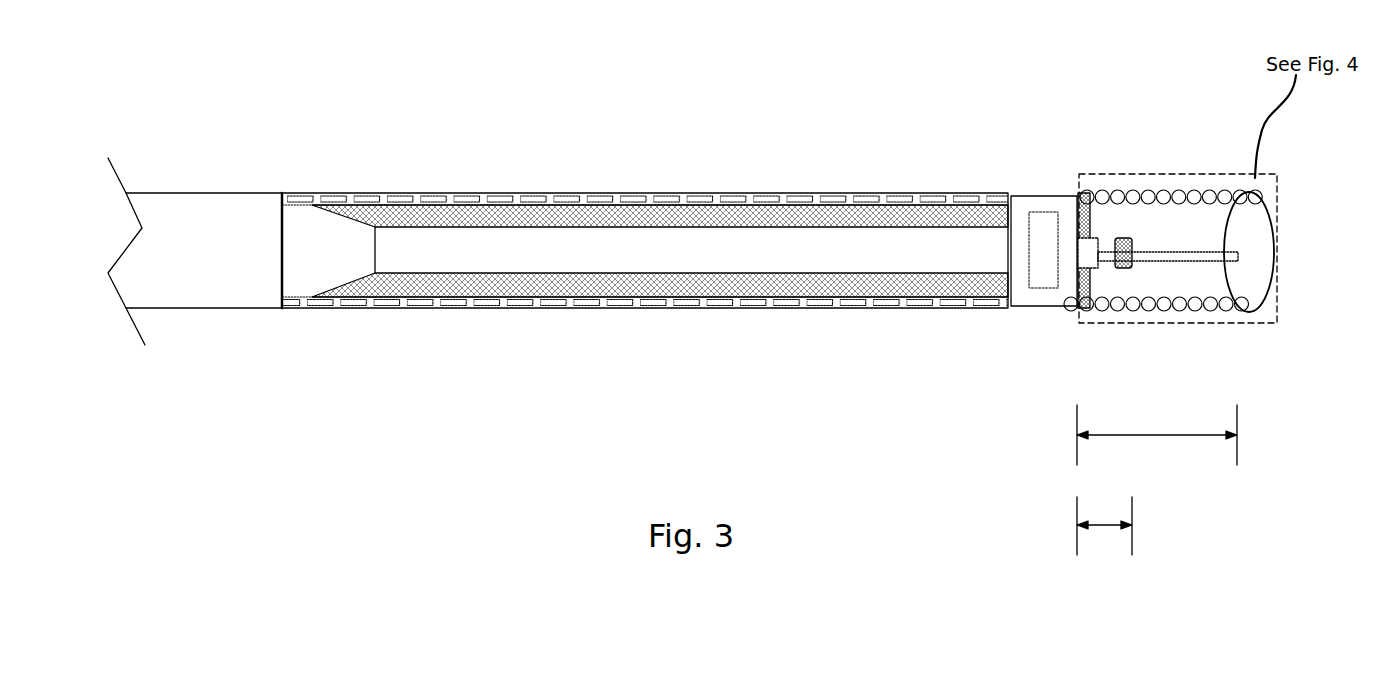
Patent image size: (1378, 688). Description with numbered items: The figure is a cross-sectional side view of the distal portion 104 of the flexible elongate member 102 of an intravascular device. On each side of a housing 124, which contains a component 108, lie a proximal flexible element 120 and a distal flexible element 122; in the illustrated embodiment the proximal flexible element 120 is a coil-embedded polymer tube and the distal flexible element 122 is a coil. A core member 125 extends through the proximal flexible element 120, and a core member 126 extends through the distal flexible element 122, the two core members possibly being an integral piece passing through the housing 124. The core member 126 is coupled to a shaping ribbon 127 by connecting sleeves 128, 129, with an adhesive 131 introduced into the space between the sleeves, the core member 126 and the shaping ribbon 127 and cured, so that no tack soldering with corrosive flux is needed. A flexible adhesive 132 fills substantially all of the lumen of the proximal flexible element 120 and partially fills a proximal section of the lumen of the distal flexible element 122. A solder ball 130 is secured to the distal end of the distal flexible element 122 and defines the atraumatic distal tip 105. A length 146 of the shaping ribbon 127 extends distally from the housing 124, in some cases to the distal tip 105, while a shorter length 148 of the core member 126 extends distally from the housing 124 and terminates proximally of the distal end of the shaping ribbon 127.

The flexible elongate member 102 is at (202, 302).
The distal portion 104 is at (439, 372).
The distal tip 105 is at (1267, 203).
The component 108 is at (1035, 290).
The proximal flexible element 120 is at (596, 193).
The distal flexible element 122 is at (1212, 196).
The housing 124 is at (1043, 197).
The core member 125 is at (752, 225).
The core member 126 is at (1110, 238).
The shaping ribbon 127 is at (1211, 262).
The connecting sleeve 128 is at (1075, 318).
The connecting sleeve 129 is at (1126, 238).
The solder ball 130 is at (1250, 314).
The adhesive 131 is at (1093, 268).
The flexible adhesive 132 is at (830, 283).
The length of the shaping ribbon 146 is at (1182, 435).
The length of the core member 148 is at (1108, 527).